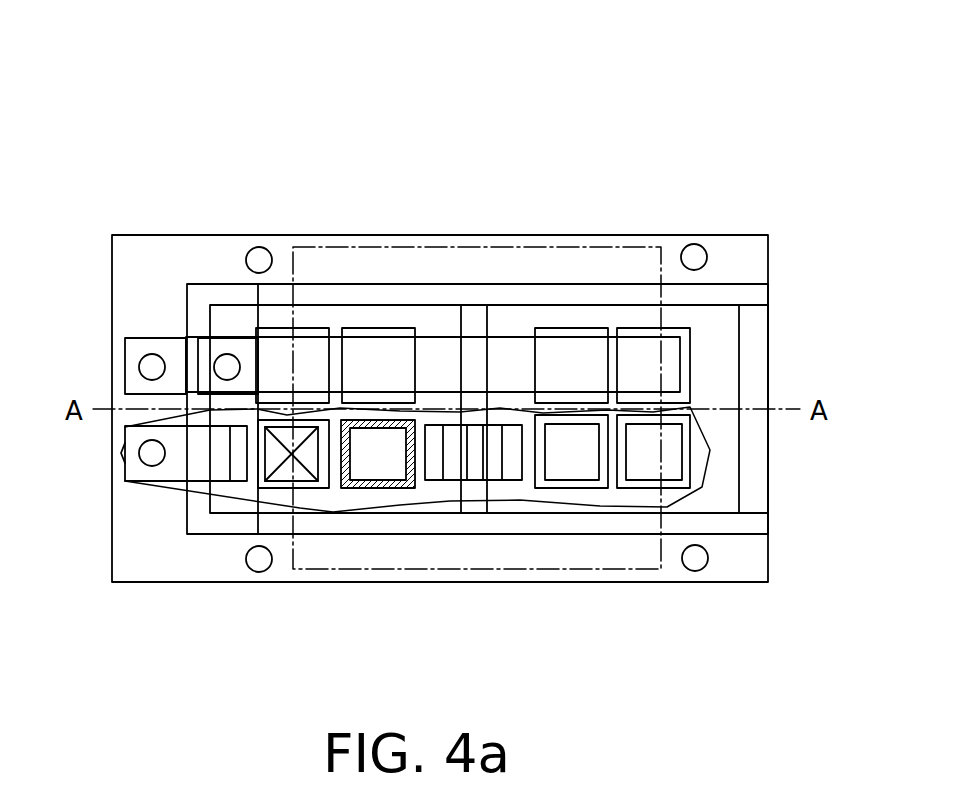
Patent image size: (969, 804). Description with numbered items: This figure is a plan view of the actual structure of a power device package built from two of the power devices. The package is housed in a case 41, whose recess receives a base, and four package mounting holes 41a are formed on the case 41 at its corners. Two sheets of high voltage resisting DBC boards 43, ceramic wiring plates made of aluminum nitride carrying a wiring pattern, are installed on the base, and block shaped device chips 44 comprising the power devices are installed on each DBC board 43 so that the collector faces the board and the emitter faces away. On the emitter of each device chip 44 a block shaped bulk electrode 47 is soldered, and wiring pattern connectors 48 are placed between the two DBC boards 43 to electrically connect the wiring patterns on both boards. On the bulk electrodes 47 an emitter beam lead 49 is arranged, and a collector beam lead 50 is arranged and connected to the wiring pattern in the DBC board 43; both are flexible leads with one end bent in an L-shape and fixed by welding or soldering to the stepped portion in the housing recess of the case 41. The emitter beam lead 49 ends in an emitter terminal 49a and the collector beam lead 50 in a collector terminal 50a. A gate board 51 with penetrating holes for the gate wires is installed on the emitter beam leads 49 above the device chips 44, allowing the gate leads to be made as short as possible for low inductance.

The case 41 is at (322, 235).
The package mounting hole 41a is at (693, 244).
The DBC board 43 is at (445, 303).
The device chip 44 is at (388, 468).
The bulk electrode 47 is at (277, 458).
The wiring pattern connector 48 is at (510, 433).
The emitter beam lead 49 is at (313, 343).
The emitter terminal 49a is at (227, 353).
The collector beam lead 50 is at (132, 368).
The collector terminal 50a is at (152, 353).
The gate board 51 is at (603, 247).